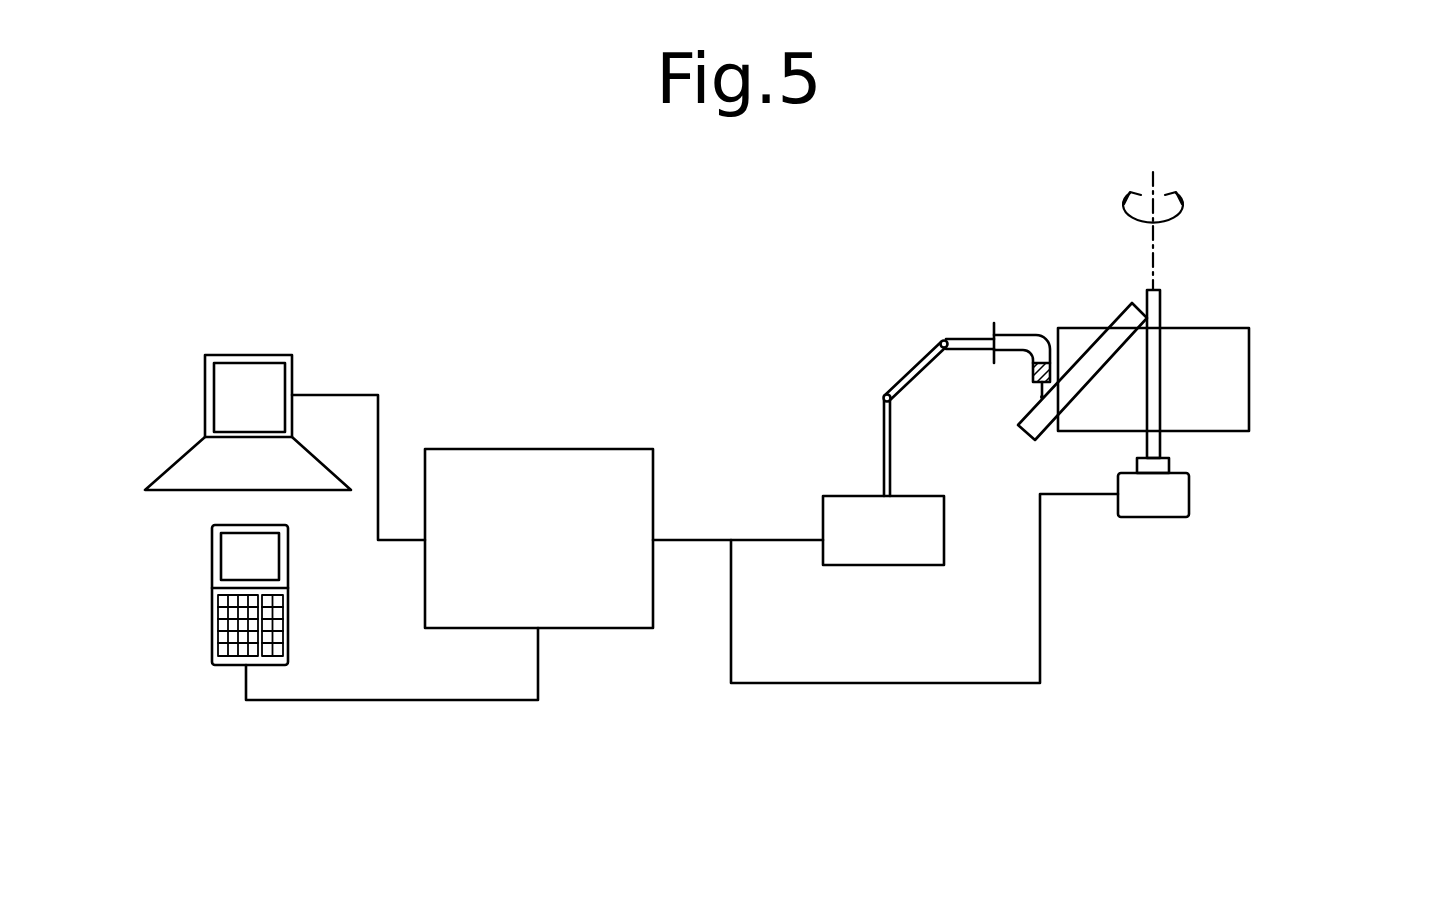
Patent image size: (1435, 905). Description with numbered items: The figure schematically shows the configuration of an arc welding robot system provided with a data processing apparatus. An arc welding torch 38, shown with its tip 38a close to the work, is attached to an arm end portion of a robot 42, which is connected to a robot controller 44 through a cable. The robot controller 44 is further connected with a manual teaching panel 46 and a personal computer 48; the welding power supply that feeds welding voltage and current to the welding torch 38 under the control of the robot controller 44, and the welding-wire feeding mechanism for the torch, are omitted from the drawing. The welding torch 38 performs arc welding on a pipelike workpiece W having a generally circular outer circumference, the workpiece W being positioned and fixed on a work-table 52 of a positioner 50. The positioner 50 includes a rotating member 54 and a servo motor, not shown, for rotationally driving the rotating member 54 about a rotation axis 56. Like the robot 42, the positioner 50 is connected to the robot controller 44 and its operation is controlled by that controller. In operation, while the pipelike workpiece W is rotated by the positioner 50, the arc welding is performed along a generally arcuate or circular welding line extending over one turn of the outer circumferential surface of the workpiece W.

The arc welding torch 38 is at (1008, 380).
The nozzle tip 38a is at (1040, 396).
The robot 42 is at (895, 368).
The robot controller 44 is at (600, 449).
The manual teaching panel 46 is at (212, 556).
The personal computer 48 is at (267, 352).
The positioner 50 is at (1083, 420).
The work-table 52 is at (1250, 362).
The rotating member 54 is at (1160, 405).
The rotation axis 56 is at (1156, 172).
The workpiece W is at (1028, 431).